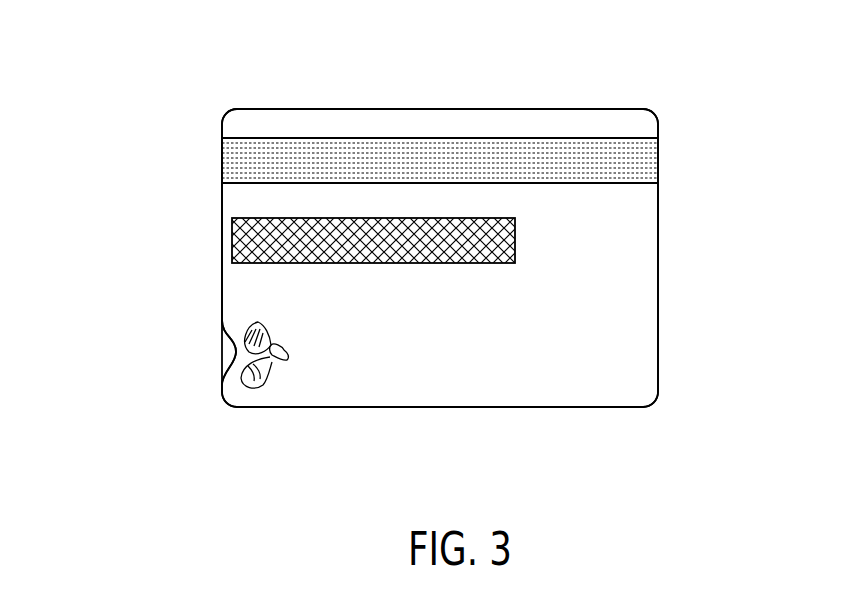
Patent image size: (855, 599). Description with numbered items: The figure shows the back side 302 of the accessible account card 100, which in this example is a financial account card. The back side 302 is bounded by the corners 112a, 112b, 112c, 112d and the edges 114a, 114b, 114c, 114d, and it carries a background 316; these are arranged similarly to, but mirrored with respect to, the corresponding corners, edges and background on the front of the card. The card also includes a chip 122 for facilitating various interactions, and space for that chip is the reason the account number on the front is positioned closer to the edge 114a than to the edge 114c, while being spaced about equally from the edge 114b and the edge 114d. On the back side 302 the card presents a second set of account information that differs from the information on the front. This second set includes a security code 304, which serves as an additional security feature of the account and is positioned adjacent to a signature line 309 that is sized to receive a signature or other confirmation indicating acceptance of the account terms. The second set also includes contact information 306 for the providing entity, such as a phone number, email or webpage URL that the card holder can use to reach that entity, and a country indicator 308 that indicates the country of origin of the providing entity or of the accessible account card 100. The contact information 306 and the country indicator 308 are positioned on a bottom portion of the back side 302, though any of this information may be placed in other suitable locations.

The accessible account card 100 is at (150, 80).
The corner 112a is at (648, 404).
The corner 112b is at (650, 110).
The corner 112c is at (223, 125).
The corner 112d is at (231, 402).
The edge 114a is at (437, 408).
The edge 114b is at (659, 233).
The edge 114c is at (424, 108).
The edge 114d is at (222, 207).
The chip 122 is at (255, 275).
The back side 302 is at (620, 273).
The security code 304 is at (547, 203).
The contact information 306 is at (531, 394).
The country indicator 308 is at (270, 372).
The signature line 309 is at (232, 243).
The background 316 is at (575, 273).